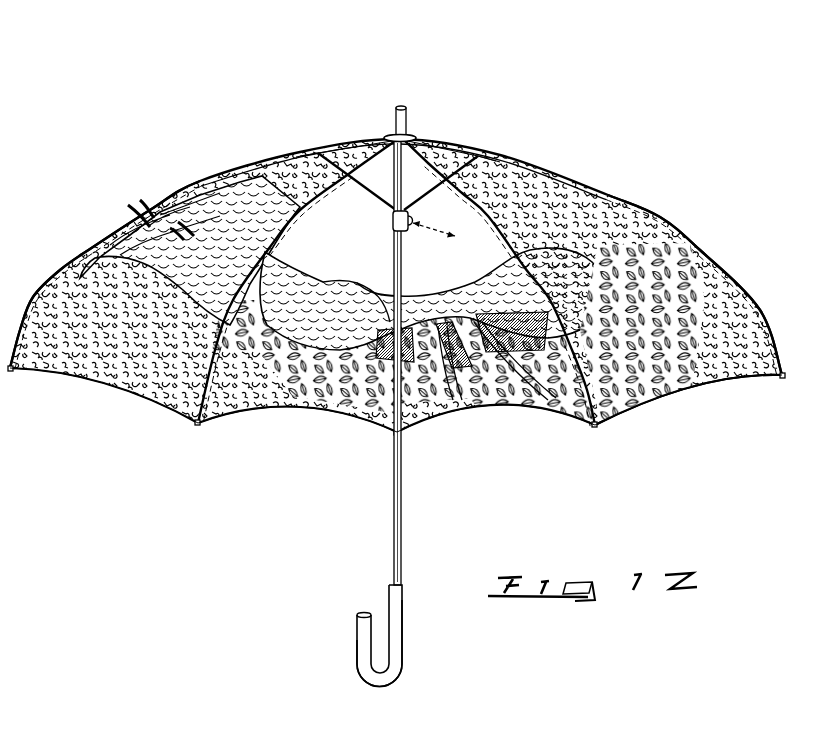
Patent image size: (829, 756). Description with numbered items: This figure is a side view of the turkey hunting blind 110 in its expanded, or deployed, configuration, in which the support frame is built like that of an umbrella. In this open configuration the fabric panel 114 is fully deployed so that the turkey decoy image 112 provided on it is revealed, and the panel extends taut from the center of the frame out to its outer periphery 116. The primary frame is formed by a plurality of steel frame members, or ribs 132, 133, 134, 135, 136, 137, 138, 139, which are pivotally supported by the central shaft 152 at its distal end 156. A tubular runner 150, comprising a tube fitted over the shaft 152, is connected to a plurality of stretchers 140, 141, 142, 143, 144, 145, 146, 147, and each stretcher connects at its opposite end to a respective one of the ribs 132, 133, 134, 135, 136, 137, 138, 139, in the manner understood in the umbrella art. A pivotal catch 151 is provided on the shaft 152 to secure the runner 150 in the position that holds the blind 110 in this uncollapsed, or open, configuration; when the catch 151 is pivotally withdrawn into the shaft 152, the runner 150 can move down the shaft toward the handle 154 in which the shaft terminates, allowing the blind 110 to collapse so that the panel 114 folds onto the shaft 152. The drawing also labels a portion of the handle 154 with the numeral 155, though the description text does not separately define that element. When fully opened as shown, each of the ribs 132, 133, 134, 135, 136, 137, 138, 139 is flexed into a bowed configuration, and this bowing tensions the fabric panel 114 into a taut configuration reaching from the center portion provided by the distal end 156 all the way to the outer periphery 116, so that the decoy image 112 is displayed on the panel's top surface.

The hunting blind 110 is at (627, 84).
The turkey decoy image 112 is at (247, 187).
The fabric panel 114 is at (657, 263).
The outer periphery 116 is at (690, 385).
The rib 132 is at (457, 332).
The rib 133 is at (526, 327).
The rib 134 is at (10, 372).
The rib 135 is at (199, 426).
The rib 136 is at (398, 440).
The rib 137 is at (594, 428).
The rib 138 is at (782, 380).
The rib 139 is at (280, 327).
The stretcher 140 is at (350, 188).
The stretcher 141 is at (498, 181).
The stretcher 142 is at (466, 174).
The stretcher 143 is at (426, 168).
The stretcher 144 is at (390, 172).
The stretcher 145 is at (357, 171).
The stretcher 146 is at (323, 162).
The stretcher 147 is at (347, 108).
The tubular runner 150 is at (395, 233).
The pivotal catch 151 is at (408, 228).
The central shaft 152 is at (392, 545).
The handle 154 is at (358, 677).
The handle grip 155 is at (408, 637).
The distal end 156 is at (407, 124).